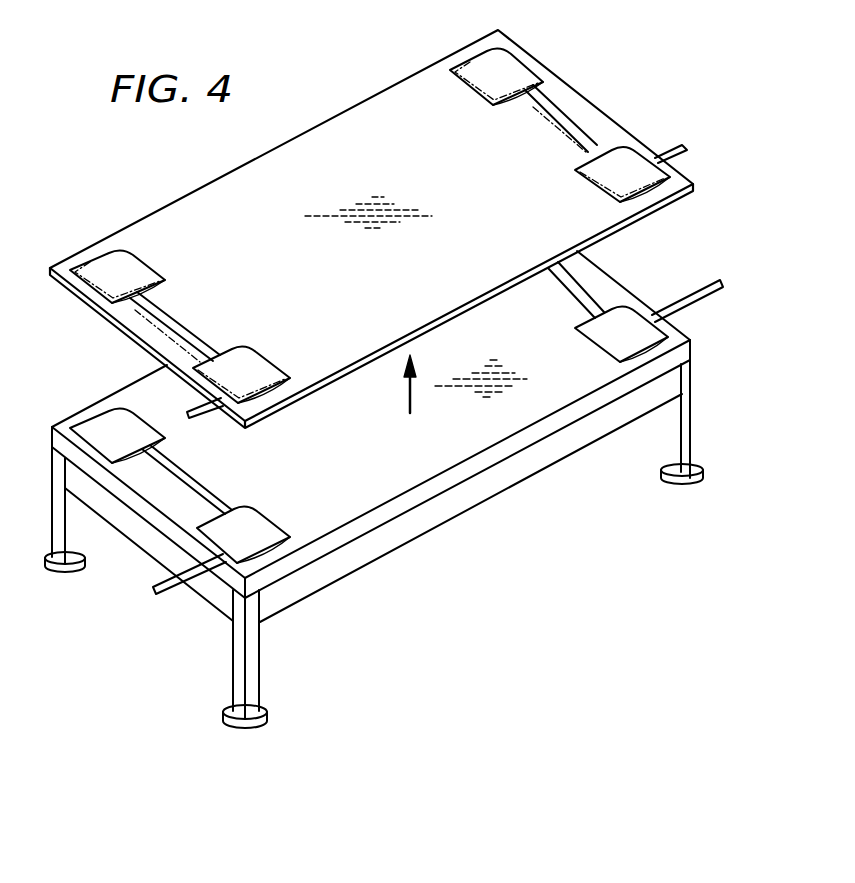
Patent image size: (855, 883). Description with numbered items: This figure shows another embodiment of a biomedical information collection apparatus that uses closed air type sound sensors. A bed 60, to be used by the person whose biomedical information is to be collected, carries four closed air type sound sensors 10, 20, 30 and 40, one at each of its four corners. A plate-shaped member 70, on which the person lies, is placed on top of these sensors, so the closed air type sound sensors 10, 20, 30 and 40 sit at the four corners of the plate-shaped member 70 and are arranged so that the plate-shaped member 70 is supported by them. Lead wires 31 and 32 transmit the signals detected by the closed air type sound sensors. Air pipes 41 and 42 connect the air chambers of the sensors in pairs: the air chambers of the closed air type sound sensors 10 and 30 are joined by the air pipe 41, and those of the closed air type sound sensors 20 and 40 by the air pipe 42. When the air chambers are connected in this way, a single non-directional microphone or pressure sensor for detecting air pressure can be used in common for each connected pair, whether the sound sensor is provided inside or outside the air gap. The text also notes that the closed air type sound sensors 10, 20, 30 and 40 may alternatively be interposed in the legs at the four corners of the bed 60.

The closed air type sound sensor 10 is at (253, 542).
The closed air type sound sensor 20 is at (617, 345).
The closed air type sound sensor 30 is at (102, 425).
The lead wire 31 is at (165, 594).
The lead wire 32 is at (703, 303).
The closed air type sound sensor 40 is at (510, 67).
The air pipe 41 is at (167, 485).
The air pipe 42 is at (577, 273).
The bed 60 is at (437, 522).
The plate-shaped member 70 is at (387, 98).